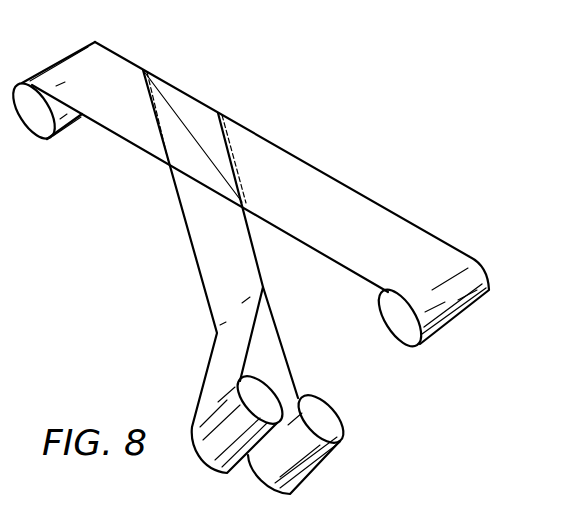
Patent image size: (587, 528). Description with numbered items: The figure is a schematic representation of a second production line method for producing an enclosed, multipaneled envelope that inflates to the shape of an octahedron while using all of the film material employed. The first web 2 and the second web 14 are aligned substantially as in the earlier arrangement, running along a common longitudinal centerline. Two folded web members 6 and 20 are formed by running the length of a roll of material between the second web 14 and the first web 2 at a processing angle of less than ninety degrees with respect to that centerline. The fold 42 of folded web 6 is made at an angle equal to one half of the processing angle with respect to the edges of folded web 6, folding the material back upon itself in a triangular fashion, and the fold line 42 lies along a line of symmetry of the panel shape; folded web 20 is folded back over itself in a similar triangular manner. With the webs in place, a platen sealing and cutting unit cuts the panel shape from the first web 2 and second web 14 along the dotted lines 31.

The folded web member 6 is at (103, 75).
The folded web member 20 is at (350, 222).
The second web 14 is at (227, 373).
The first web 2 is at (280, 370).
The fold line 42 is at (188, 132).
The dotted lines 31 is at (165, 148).